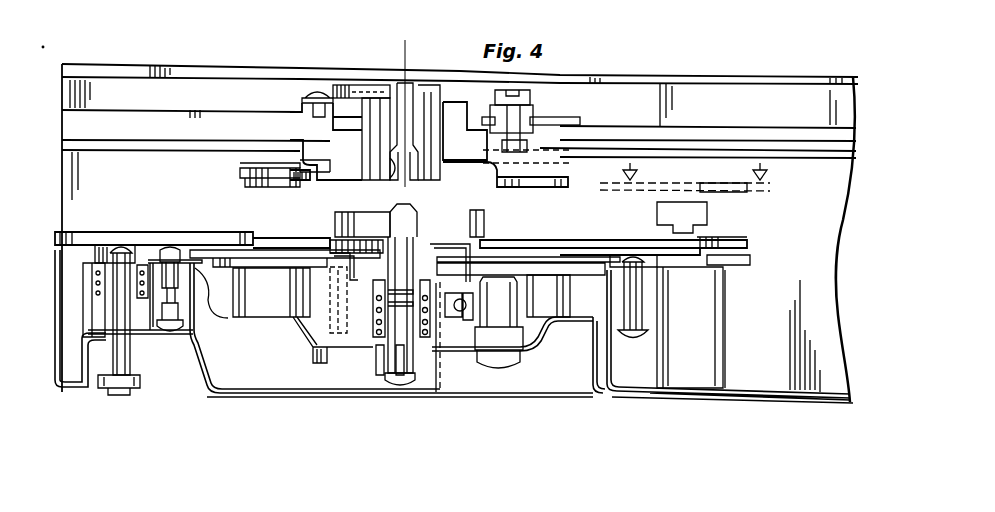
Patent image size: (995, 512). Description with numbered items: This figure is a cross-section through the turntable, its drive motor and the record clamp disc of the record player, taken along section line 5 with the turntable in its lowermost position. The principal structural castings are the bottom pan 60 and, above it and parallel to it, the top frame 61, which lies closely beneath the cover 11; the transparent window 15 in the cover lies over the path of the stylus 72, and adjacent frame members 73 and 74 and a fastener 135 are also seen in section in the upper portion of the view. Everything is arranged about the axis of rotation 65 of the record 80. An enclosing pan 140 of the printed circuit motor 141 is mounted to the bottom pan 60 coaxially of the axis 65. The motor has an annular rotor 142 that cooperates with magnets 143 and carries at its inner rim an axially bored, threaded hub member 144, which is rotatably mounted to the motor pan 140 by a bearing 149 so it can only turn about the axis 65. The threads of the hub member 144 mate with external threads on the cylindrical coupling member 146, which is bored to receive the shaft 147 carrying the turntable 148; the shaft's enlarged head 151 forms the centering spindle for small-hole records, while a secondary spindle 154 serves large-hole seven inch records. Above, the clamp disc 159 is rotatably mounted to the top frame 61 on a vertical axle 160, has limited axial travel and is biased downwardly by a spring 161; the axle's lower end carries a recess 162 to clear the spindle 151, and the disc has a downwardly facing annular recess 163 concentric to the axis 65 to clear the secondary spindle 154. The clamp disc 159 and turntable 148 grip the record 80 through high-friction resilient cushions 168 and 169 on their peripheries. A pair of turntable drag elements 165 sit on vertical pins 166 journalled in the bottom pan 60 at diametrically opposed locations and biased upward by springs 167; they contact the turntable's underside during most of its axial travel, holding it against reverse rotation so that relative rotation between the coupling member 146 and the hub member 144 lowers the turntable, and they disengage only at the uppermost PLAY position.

The section line 5 is at (365, 408).
The cover 11 is at (197, 72).
The transparent window 15 is at (643, 77).
The bottom pan 60 is at (704, 399).
The top frame 61 is at (102, 128).
The axis of rotation 65 is at (408, 58).
The stylus 72 is at (766, 178).
The rail plate 73 is at (682, 124).
The rail flange 74 is at (565, 117).
The record 80 is at (767, 198).
The bolt 135 is at (530, 88).
The enclosing pan 140 is at (534, 332).
The printed circuit motor 141 is at (297, 345).
The rotor 142 is at (560, 270).
The magnets 143 is at (278, 307).
The hub member 144 is at (456, 260).
The coupling member 146 is at (440, 265).
The shaft 147 is at (412, 276).
The turntable 148 is at (265, 232).
The bearing 149 is at (462, 330).
The enlarged head 151 is at (414, 220).
The secondary spindle 154 is at (338, 226).
The clamp disc 159 is at (265, 165).
The axle 160 is at (418, 118).
The spring 161 is at (393, 70).
The recess 162 is at (395, 172).
The annular recess 163 is at (294, 160).
The turntable drag elements 165 is at (712, 220).
The pins 166 is at (132, 357).
The springs 167 is at (93, 296).
The resilient cushion 168 is at (246, 180).
The resilient cushion 169 is at (748, 245).